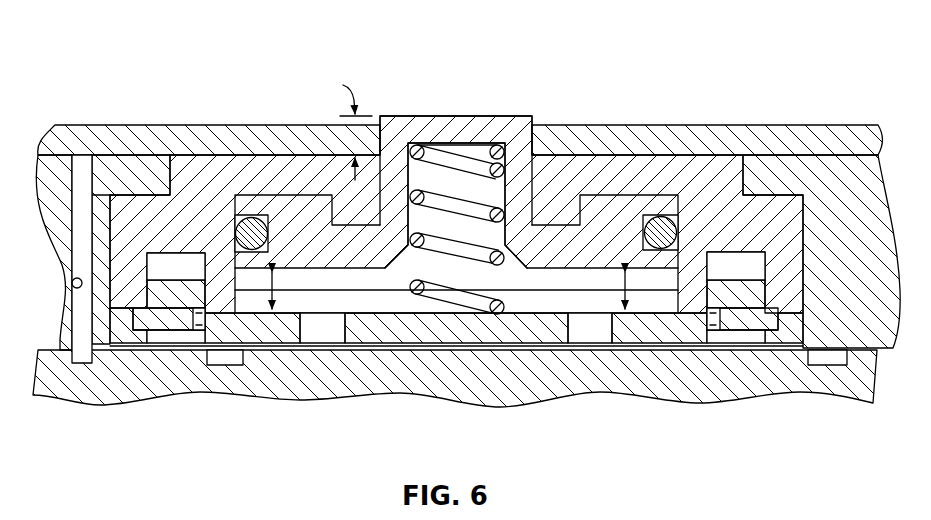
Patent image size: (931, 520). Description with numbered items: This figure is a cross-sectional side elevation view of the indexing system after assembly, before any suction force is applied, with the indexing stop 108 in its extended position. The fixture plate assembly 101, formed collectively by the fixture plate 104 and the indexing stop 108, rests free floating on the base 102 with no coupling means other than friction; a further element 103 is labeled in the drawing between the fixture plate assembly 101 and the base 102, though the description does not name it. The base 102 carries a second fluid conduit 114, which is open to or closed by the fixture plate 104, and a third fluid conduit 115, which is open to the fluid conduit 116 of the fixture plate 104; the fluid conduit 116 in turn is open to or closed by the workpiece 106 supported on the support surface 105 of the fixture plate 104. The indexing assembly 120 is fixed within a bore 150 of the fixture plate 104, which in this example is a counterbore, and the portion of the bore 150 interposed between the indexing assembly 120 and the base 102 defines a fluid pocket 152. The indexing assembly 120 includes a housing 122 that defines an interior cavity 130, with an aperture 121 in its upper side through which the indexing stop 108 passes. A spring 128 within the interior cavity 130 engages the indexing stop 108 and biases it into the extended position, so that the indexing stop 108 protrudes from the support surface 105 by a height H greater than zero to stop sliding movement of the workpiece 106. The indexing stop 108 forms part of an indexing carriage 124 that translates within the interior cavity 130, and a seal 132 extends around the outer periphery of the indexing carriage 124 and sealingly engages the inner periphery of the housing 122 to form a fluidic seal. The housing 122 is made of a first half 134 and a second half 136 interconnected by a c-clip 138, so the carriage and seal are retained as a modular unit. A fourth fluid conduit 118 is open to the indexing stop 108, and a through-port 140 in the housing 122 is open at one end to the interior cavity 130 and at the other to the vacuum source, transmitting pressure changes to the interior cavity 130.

The fixture plate assembly 101 is at (908, 345).
The base 102 is at (104, 412).
The gasket plate 103 is at (60, 345).
The fixture plate 104 is at (128, 150).
The support surface 105 is at (155, 154).
The workpiece 106 is at (218, 153).
The indexing stop 108 is at (505, 127).
The second fluid conduit 114 is at (828, 362).
The third fluid conduit 115 is at (80, 357).
The fluid conduit 116 is at (72, 279).
The fourth fluid conduit 118 is at (236, 355).
The indexing assembly 120 is at (619, 143).
The aperture 121 is at (522, 177).
The housing 122 is at (411, 352).
The indexing carriage 124 is at (617, 210).
The spring 128 is at (410, 146).
The interior cavity 130 is at (592, 311).
The seal 132 is at (254, 228).
The first half 134 is at (705, 154).
The second half 136 is at (657, 333).
The c-clip 138 is at (743, 325).
The through-port 140 is at (320, 325).
The bore 150 is at (113, 310).
The fluid pocket 152 is at (170, 346).